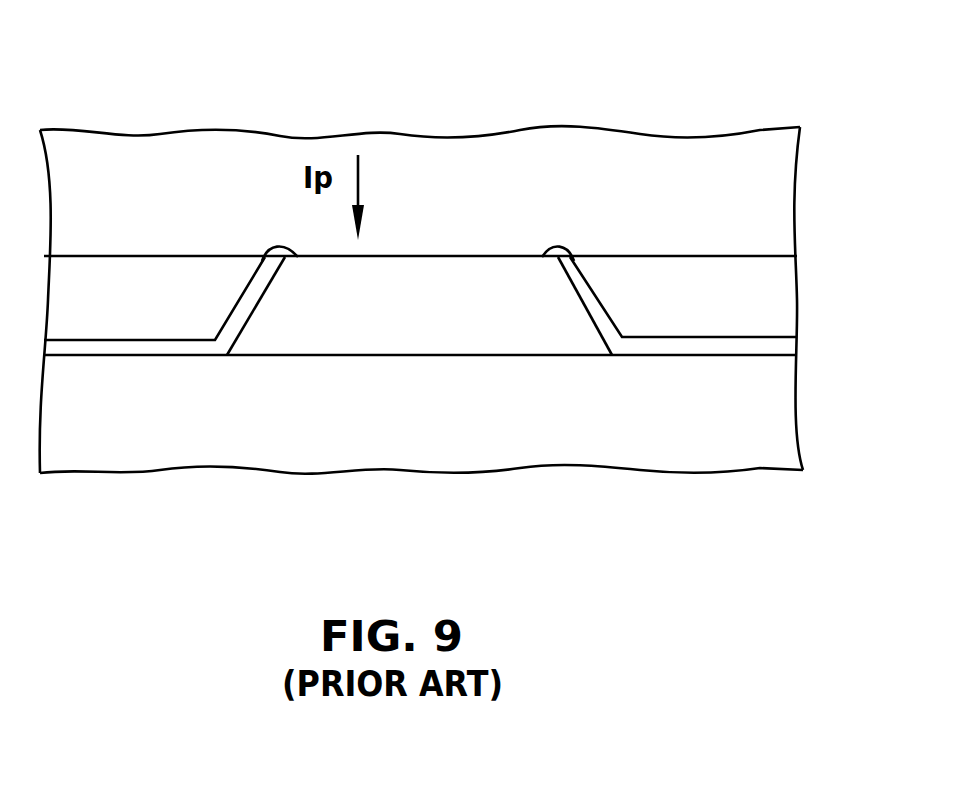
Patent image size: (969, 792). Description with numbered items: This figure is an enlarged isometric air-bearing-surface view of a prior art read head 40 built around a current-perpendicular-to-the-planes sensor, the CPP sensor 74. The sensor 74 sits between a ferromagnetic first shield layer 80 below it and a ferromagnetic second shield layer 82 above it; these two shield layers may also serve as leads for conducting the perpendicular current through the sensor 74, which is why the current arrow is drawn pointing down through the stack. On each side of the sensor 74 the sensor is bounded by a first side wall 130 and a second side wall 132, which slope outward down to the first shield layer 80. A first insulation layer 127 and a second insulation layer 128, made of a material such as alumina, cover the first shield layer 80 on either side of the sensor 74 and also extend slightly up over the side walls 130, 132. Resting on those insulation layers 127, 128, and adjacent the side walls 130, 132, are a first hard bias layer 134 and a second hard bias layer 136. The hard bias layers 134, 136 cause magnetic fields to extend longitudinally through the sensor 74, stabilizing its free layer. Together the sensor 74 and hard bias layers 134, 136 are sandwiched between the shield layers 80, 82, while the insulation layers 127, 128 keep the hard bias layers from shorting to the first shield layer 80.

The read head 40 is at (209, 104).
The CPP sensor 74 is at (508, 228).
The first shield layer 80 is at (187, 440).
The second shield layer 82 is at (767, 188).
The first insulation layer 127 is at (117, 347).
The second insulation layer 128 is at (687, 344).
The first side wall 130 is at (250, 293).
The second side wall 132 is at (593, 287).
The first hard bias layer 134 is at (127, 270).
The second hard bias layer 136 is at (710, 267).